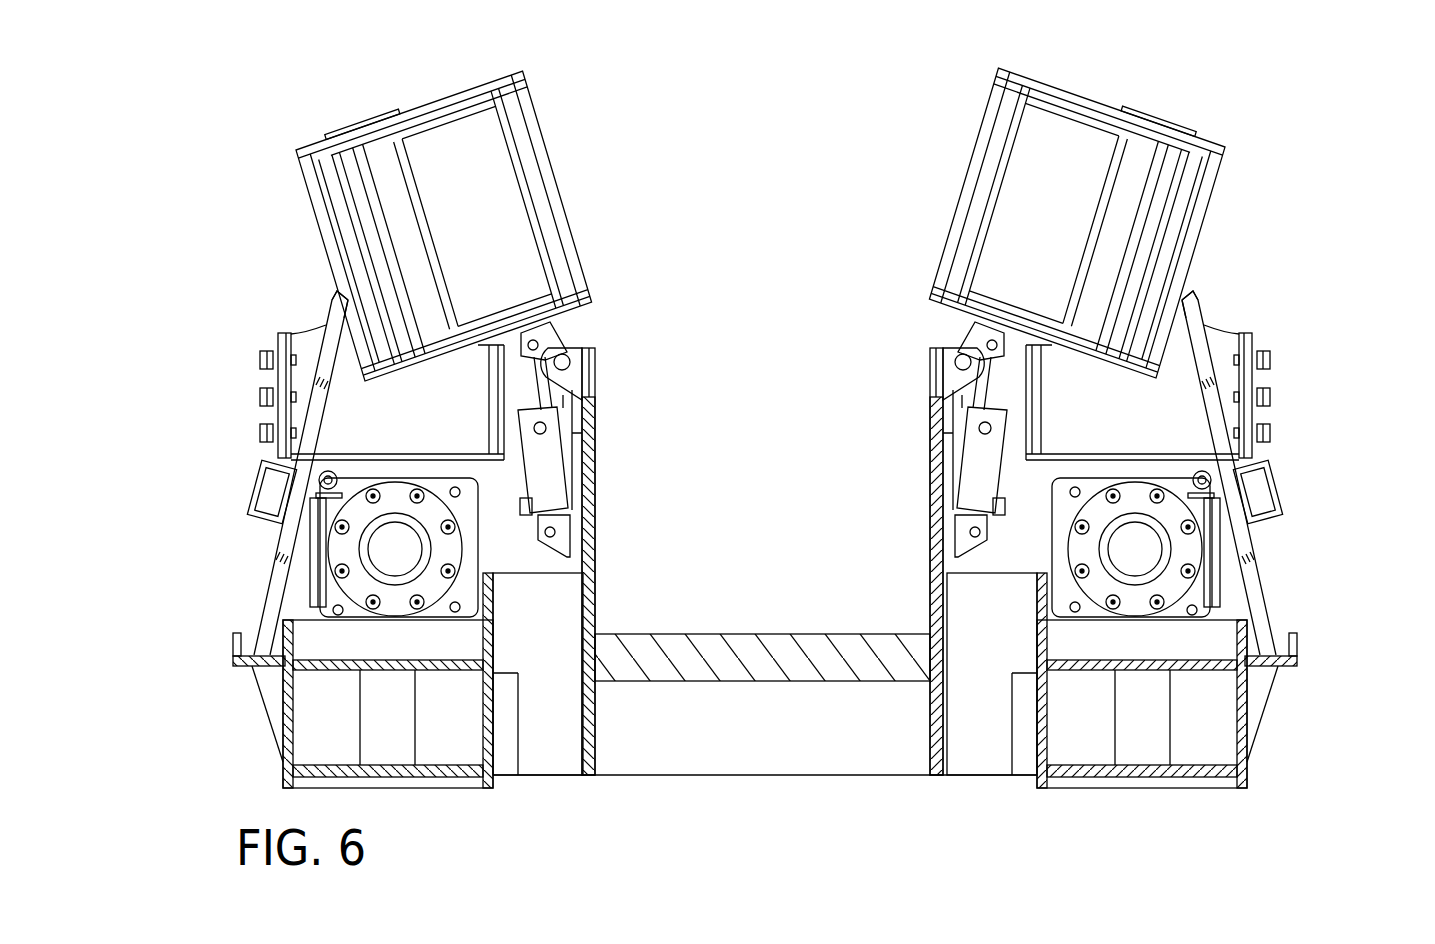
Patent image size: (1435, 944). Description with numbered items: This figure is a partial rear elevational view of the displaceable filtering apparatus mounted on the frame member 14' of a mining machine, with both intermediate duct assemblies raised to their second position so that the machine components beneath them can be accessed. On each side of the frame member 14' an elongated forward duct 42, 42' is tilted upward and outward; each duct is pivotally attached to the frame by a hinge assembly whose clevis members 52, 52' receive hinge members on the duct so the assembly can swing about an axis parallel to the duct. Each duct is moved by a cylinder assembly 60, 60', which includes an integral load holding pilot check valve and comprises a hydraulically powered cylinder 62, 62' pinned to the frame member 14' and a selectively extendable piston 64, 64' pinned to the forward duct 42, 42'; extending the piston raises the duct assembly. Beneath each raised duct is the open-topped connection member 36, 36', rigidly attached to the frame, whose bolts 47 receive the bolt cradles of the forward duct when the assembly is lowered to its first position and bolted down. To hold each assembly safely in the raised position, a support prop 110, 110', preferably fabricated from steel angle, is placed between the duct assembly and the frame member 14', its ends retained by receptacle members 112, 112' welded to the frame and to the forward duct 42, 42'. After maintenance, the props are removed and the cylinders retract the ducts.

The frame member 14' is at (765, 607).
The elongated forward duct 42 is at (498, 223).
The elongated forward duct 42' is at (1113, 217).
The support prop 110 is at (230, 473).
The support prop 110' is at (1303, 473).
The receptacle member 112 is at (221, 476).
The receptacle member 112' is at (1308, 454).
The connection member 36 is at (338, 382).
The connection member 36' is at (1194, 383).
The bolts 47 is at (260, 432).
The clevis member 52 is at (628, 324).
The clevis member 52' is at (898, 331).
The cylinder assembly 60 is at (403, 509).
The cylinder assembly 60' is at (1095, 544).
The hydraulically powered cylinder 62 is at (544, 482).
The hydraulically powered cylinder 62' is at (981, 482).
The piston 64 is at (608, 416).
The piston 64' is at (907, 416).